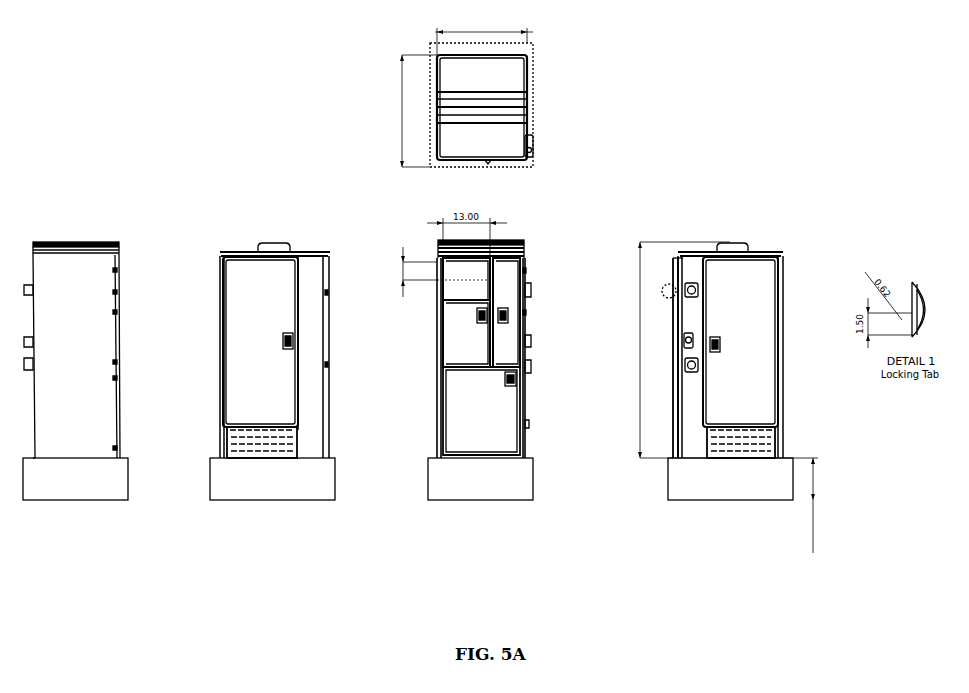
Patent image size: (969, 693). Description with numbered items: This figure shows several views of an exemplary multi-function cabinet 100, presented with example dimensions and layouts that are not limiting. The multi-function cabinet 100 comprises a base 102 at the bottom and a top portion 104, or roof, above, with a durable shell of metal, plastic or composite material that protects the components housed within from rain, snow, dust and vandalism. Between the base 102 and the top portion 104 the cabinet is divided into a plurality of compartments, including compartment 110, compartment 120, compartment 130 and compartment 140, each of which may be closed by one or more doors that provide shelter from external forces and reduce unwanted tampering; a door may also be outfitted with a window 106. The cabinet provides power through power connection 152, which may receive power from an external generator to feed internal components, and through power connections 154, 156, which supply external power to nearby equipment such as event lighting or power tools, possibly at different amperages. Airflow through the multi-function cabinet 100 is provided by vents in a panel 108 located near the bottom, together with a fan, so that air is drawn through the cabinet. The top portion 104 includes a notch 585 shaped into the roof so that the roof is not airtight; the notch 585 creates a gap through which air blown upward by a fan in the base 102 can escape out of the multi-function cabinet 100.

The multi-function cabinet 100 is at (203, 84).
The base 102 is at (128, 472).
The top portion 104 is at (78, 242).
The window 106 is at (450, 274).
The panel 108 is at (230, 441).
The compartment 110 is at (437, 336).
The compartment 120 is at (530, 280).
The compartment 130 is at (451, 448).
The compartment 140 is at (768, 331).
The power connection 152 is at (698, 283).
The power connection 154 is at (687, 333).
The power connection 156 is at (687, 363).
The notch 585 is at (260, 242).